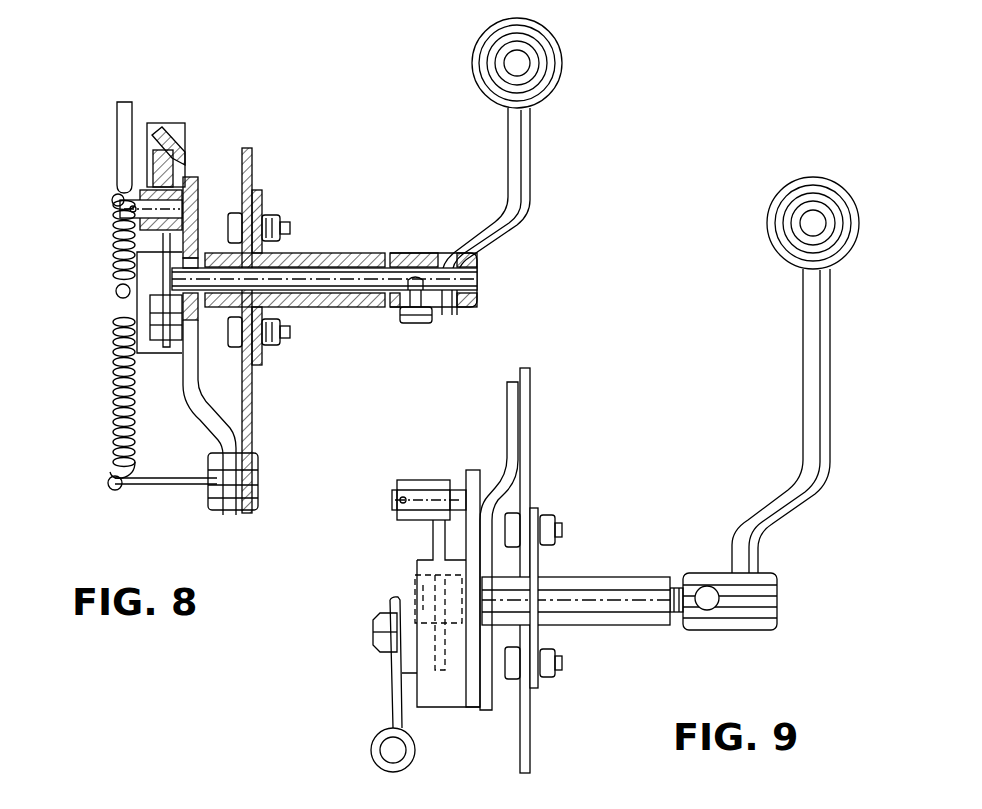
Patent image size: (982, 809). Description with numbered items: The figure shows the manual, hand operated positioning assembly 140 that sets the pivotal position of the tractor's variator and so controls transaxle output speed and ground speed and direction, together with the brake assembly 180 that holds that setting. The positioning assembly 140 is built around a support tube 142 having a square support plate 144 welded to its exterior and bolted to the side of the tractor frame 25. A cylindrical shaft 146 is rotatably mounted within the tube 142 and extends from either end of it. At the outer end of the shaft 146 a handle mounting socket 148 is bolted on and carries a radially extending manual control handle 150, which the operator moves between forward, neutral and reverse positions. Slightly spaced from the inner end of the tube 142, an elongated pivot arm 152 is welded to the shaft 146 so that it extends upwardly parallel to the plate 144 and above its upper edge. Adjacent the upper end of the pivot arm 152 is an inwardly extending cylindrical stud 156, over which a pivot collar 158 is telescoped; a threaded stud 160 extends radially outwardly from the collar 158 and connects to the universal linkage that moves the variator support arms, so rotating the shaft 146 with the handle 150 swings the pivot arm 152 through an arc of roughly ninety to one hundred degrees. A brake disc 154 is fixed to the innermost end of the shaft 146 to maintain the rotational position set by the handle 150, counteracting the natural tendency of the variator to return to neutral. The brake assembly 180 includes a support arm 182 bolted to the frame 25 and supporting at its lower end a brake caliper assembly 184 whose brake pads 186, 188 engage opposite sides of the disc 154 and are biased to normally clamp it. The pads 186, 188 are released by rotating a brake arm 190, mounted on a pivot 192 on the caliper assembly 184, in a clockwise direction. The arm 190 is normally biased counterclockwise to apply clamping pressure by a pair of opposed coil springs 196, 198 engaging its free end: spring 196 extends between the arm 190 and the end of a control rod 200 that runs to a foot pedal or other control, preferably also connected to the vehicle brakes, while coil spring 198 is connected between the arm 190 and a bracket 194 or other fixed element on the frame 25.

In FIG. 8, the tractor frame 25 is at (252, 420).
In FIG. 9, the tractor frame 25 is at (530, 470).
In FIG. 8, the positioning assembly 140 is at (346, 108).
In FIG. 9, the positioning assembly 140 is at (594, 386).
In FIG. 8, the support tube 142 is at (353, 277).
In FIG. 9, the support tube 142 is at (627, 577).
In FIG. 8, the square support plate 144 is at (266, 200).
In FIG. 9, the square support plate 144 is at (540, 560).
In FIG. 8, the cylindrical shaft 146 is at (358, 253).
In FIG. 9, the cylindrical shaft 146 is at (678, 626).
In FIG. 8, the handle mounting socket 148 is at (478, 263).
In FIG. 9, the handle mounting socket 148 is at (752, 633).
In FIG. 8, the manual control handle 150 is at (532, 168).
In FIG. 9, the manual control handle 150 is at (803, 420).
In FIG. 8, the pivot arm 152 is at (197, 228).
In FIG. 9, the pivot arm 152 is at (472, 472).
In FIG. 8, the brake disc 154 is at (160, 240).
In FIG. 9, the brake disc 154 is at (433, 533).
In FIG. 8, the cylindrical stud 156 is at (118, 205).
In FIG. 9, the cylindrical stud 156 is at (400, 478).
In FIG. 8, the pivot collar 158 is at (181, 190).
In FIG. 8, the threaded stud 160 is at (182, 152).
In FIG. 8, the brake assembly 180 is at (100, 388).
In FIG. 9, the brake assembly 180 is at (365, 649).
In FIG. 8, the support arm 182 is at (207, 417).
In FIG. 9, the support arm 182 is at (507, 405).
In FIG. 8, the brake caliper assembly 184 is at (157, 365).
In FIG. 9, the brake caliper assembly 184 is at (447, 706).
In FIG. 8, the brake pad 186 is at (157, 315).
In FIG. 8, the brake pad 188 is at (183, 330).
In FIG. 8, the brake arm 190 is at (113, 330).
In FIG. 9, the brake arm 190 is at (390, 707).
In FIG. 9, the pivot 192 is at (375, 625).
In FIG. 8, the bracket 194 is at (167, 490).
In FIG. 8, the coil spring 196 is at (116, 245).
In FIG. 8, the coil spring 198 is at (133, 452).
In FIG. 8, the control rod 200 is at (133, 110).